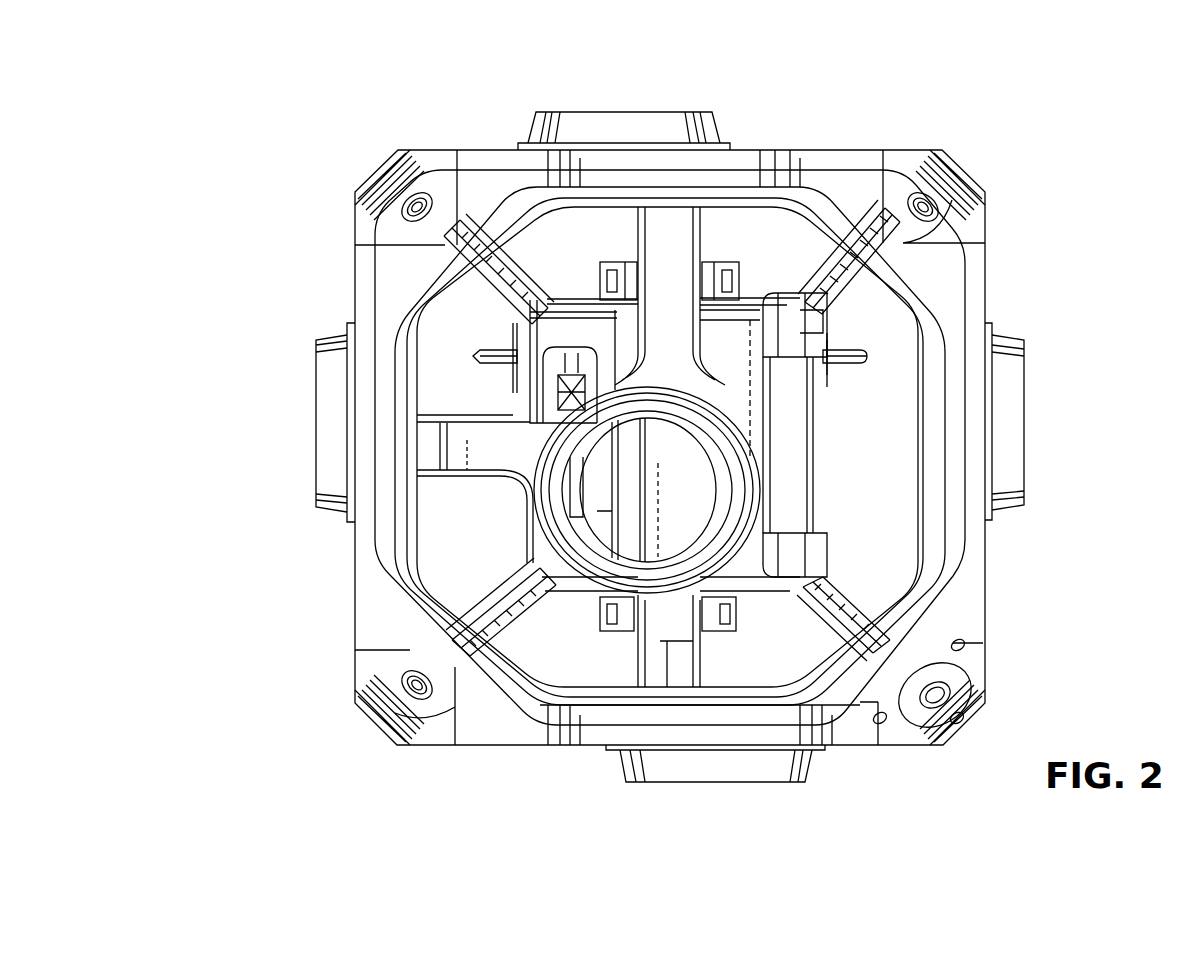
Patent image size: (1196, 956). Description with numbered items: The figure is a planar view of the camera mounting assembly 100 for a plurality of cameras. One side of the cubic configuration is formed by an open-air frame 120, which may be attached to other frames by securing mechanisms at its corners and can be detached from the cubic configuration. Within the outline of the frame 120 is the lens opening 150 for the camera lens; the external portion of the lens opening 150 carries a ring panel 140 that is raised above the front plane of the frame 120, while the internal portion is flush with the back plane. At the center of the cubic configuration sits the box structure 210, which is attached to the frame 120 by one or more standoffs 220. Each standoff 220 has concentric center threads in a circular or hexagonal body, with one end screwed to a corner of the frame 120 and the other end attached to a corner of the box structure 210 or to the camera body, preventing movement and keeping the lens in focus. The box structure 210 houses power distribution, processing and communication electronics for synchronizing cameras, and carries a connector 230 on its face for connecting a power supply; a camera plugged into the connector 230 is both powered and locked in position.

The camera mounting assembly 100 is at (230, 793).
The frame 120 is at (410, 652).
The ring panel 140 is at (715, 117).
The lens opening 150 is at (616, 90).
The box structure 210 is at (592, 334).
The standoff 220 is at (485, 620).
The connector 230 is at (553, 385).